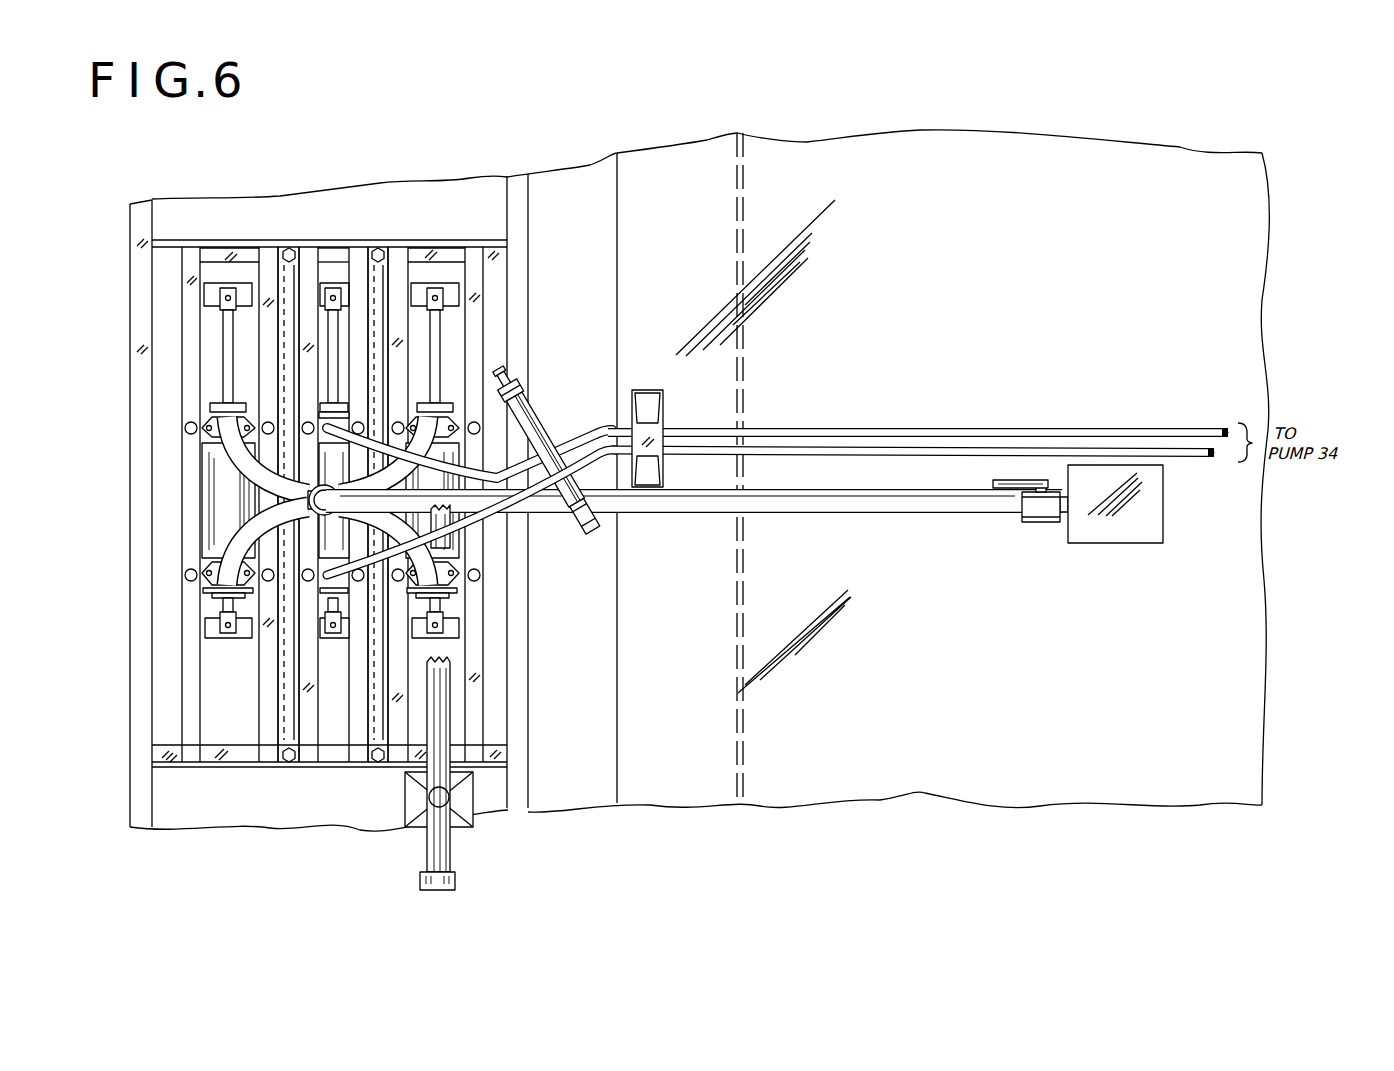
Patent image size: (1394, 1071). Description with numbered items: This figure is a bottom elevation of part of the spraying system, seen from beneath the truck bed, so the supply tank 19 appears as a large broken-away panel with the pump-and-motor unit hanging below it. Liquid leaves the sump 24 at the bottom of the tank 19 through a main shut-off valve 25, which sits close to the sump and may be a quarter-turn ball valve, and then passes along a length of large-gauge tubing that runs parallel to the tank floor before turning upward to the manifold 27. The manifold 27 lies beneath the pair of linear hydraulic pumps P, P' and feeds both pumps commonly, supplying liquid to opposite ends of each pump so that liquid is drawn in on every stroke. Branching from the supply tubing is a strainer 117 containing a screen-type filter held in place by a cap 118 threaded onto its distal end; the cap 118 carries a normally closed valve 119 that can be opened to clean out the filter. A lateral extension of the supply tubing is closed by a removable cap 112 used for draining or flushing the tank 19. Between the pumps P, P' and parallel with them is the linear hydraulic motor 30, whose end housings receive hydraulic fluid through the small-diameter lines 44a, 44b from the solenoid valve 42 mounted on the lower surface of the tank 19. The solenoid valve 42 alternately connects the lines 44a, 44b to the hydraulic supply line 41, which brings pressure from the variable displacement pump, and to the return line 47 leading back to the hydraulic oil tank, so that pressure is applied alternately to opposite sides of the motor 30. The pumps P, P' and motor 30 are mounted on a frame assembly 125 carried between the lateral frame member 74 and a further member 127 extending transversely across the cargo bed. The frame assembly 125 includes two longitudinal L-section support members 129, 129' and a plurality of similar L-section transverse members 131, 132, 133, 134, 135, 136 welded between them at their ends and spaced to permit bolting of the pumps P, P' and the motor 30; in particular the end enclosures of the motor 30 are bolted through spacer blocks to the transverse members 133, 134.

The supply tank 19 is at (886, 160).
The sump 24 is at (1164, 526).
The valve 25 is at (1043, 525).
The manifold 27 is at (237, 540).
The linear hydraulic motor 30 is at (305, 566).
The hydraulic line 41 is at (952, 430).
The solenoid valve 42 is at (662, 425).
The hydraulic line 44a is at (560, 485).
The hydraulic line 44b is at (502, 520).
The hydraulic fluid return line 47 is at (906, 458).
The lateral frame member 74 is at (130, 375).
The cap 112 is at (455, 882).
The strainer 117 is at (545, 432).
The cap 118 is at (520, 395).
The valve 119 is at (505, 381).
The frame assembly 125 is at (268, 246).
The transverse member 127 is at (528, 234).
The longitudinal support member 129 is at (329, 778).
The longitudinal support member 129' is at (349, 477).
The transverse member 131 is at (180, 278).
The transverse member 132 is at (252, 273).
The transverse member 133 is at (308, 270).
The transverse member 134 is at (380, 275).
The transverse member 135 is at (445, 246).
The transverse member 136 is at (515, 283).
The linear hydraulic pump P is at (485, 460).
The linear hydraulic pump P' is at (162, 460).